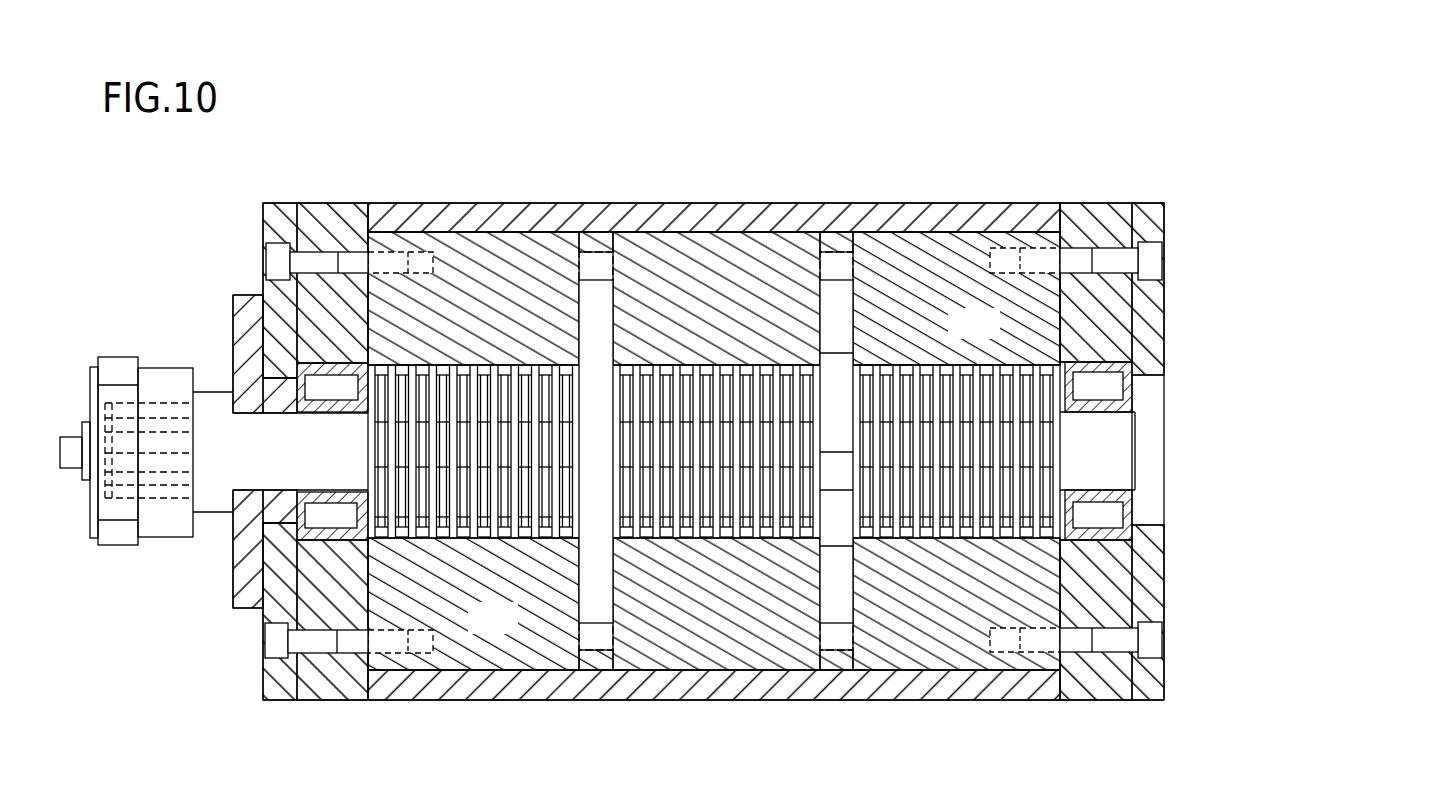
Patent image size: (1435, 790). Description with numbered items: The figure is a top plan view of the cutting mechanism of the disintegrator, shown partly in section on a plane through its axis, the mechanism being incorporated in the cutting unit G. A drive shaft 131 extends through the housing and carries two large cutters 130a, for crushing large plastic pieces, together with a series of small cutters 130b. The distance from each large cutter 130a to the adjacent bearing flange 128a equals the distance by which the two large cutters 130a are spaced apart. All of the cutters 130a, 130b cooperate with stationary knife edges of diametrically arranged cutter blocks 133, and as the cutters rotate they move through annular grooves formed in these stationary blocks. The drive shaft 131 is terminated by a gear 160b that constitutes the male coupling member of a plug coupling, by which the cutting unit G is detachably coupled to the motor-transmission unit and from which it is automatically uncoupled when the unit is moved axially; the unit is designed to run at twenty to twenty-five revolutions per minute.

The bearing flange 128a is at (285, 320).
The large cutter 130a is at (593, 325).
The small cutter 130b is at (976, 555).
The drive shaft 131 is at (217, 498).
The cutter block 133 is at (995, 337).
The gear 160b is at (117, 542).
The cutting unit G is at (1166, 603).